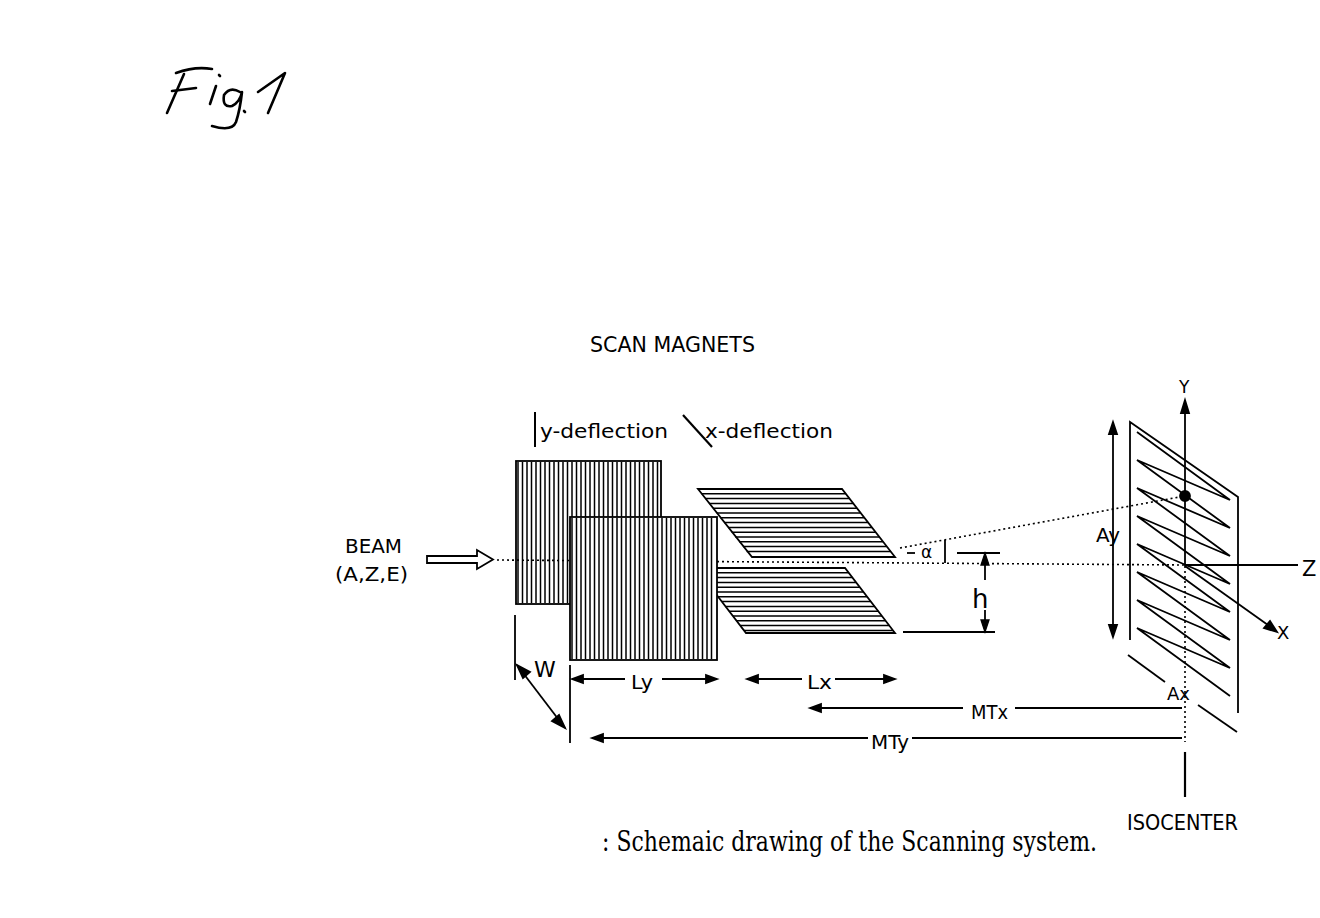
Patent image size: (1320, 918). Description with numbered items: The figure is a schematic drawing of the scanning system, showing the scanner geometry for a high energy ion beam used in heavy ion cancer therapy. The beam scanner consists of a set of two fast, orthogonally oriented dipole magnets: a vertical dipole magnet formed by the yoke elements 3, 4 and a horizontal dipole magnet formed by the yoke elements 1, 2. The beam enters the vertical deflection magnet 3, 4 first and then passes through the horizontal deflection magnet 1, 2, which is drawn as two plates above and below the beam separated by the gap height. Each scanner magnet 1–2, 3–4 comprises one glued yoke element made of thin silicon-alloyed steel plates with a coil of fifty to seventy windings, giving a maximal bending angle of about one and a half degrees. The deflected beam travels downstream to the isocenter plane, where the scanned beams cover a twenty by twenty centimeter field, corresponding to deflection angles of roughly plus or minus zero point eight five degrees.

The horizontal dipole magnet half 1 is at (842, 489).
The horizontal dipole magnet half 2 is at (858, 632).
The vertical dipole magnet half 3 is at (620, 655).
The vertical dipole magnet half 4 is at (530, 468).